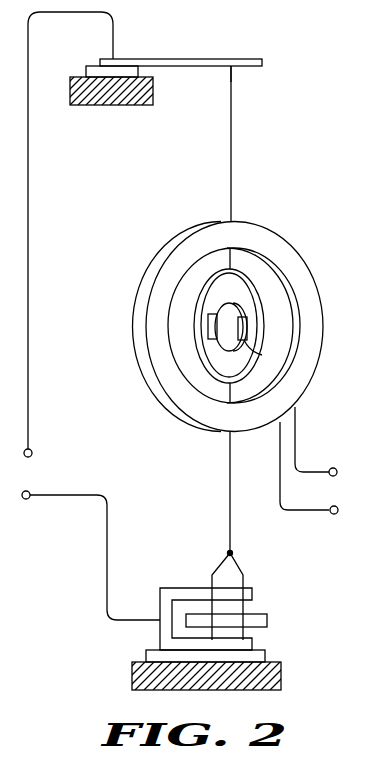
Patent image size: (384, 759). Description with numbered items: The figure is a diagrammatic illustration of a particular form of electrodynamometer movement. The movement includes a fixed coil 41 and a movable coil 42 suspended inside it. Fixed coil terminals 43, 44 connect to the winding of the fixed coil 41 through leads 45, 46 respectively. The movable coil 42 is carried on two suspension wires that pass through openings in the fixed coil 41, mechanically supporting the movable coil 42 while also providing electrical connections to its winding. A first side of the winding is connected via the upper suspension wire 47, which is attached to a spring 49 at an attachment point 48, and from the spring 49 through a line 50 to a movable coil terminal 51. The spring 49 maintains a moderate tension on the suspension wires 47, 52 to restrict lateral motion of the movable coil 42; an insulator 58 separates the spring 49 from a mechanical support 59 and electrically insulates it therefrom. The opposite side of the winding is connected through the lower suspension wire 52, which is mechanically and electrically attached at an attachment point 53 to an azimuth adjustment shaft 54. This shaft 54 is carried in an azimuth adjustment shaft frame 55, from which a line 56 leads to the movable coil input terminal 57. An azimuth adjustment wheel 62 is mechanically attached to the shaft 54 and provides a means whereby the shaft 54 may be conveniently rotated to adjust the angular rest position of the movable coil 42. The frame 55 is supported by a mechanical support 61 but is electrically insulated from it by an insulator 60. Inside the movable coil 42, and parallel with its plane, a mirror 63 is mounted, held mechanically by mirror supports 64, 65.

The fixed coil 41 is at (316, 272).
The movable coil 42 is at (205, 297).
The fixed coil terminal 43 is at (334, 468).
The fixed coil terminal 44 is at (333, 514).
The lead 45 is at (298, 430).
The lead 46 is at (279, 484).
The upper suspension wire 47 is at (232, 175).
The attachment point 48 is at (233, 68).
The spring 49 is at (221, 59).
The line 50 is at (30, 197).
The movable coil terminal 51 is at (31, 449).
The lower suspension wire 52 is at (228, 501).
The attachment point 53 is at (233, 551).
The azimuth adjustment shaft 54 is at (245, 572).
The azimuth adjustment shaft frame 55 is at (184, 588).
The line 56 is at (106, 589).
The movable coil input terminal 57 is at (27, 499).
The insulator 58 is at (86, 71).
The mechanical support 59 is at (153, 96).
The insulator 60 is at (266, 657).
The mechanical support 61 is at (282, 678).
The azimuth adjustment wheel 62 is at (268, 620).
The mirror 63 is at (247, 305).
The mirror support 64 is at (208, 334).
The mirror support 65 is at (246, 342).